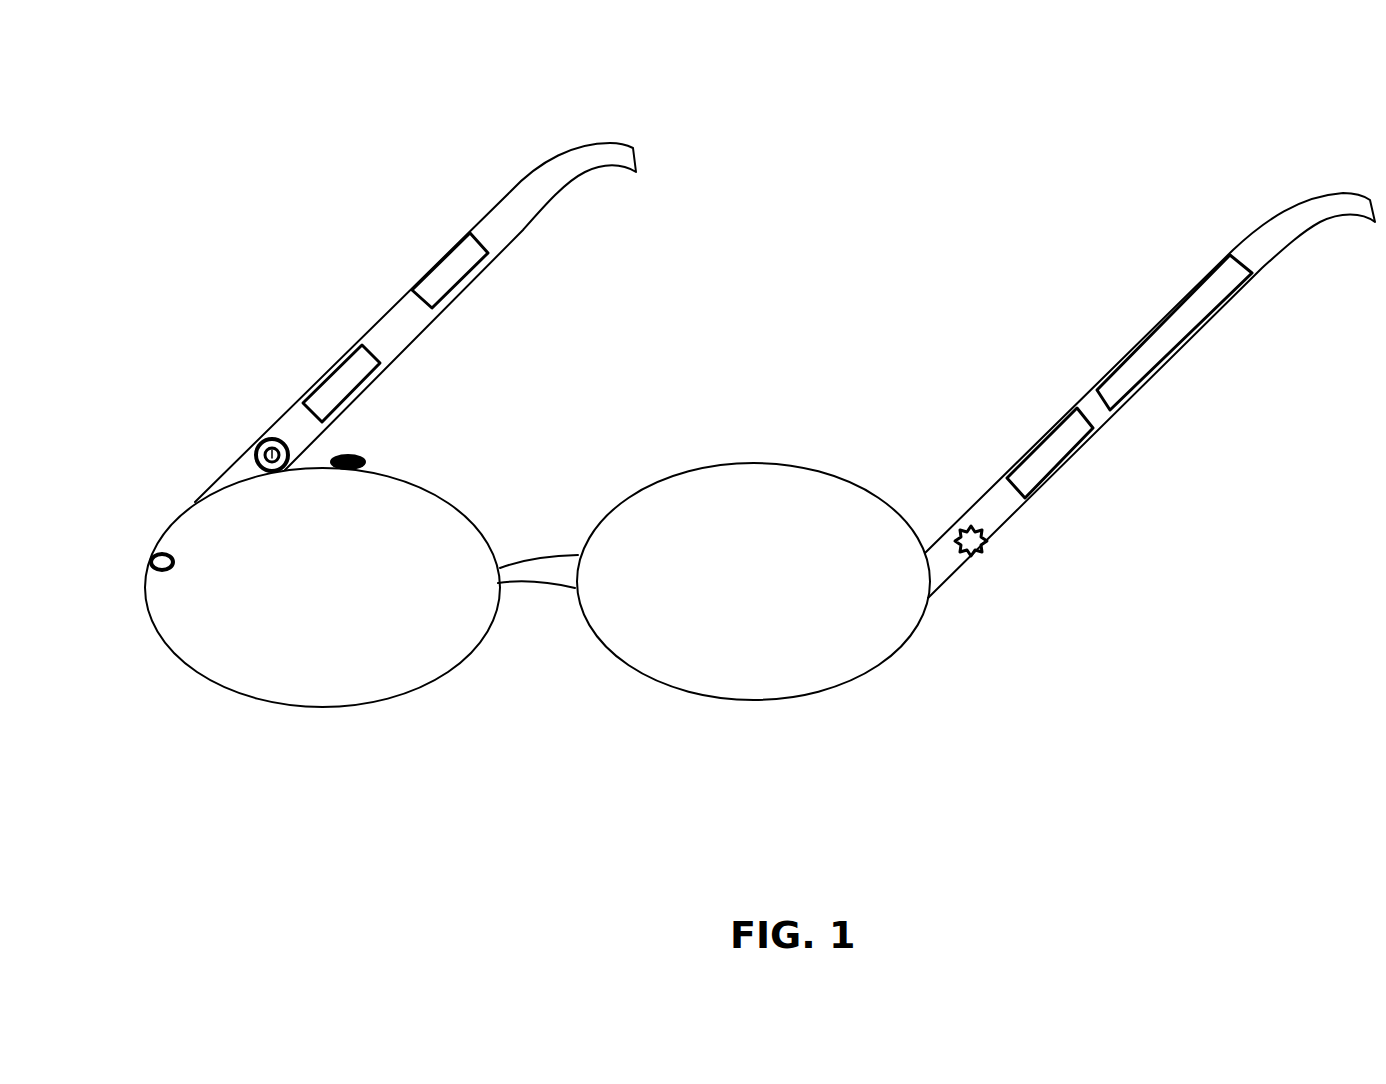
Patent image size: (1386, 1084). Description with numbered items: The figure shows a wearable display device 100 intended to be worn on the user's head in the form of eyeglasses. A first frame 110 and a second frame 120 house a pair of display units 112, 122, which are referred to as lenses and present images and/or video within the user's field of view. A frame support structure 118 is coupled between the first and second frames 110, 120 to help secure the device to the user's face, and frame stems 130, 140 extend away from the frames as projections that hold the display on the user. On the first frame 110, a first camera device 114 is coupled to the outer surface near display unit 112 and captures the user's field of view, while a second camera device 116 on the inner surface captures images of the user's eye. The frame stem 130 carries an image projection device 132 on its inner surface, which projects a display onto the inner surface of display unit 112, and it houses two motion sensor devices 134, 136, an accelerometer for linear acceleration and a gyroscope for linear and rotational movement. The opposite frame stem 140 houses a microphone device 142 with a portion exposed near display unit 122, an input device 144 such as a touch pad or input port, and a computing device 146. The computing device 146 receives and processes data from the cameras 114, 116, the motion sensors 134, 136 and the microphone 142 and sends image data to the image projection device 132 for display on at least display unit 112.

The wearable display device 100 is at (425, 145).
The first frame 110 is at (455, 667).
The display unit 112 is at (337, 675).
The first camera device 114 is at (162, 552).
The second camera device 116 is at (366, 462).
The frame support structure 118 is at (556, 555).
The second frame 120 is at (862, 678).
The display unit 122 is at (732, 678).
The frame stem 130 is at (523, 188).
The image projection device 132 is at (272, 440).
The motion sensor device 134 is at (327, 393).
The motion sensor device 136 is at (428, 293).
The frame stem 140 is at (1247, 253).
The microphone device 142 is at (968, 558).
The input device 144 is at (1043, 468).
The computing device 146 is at (1123, 375).